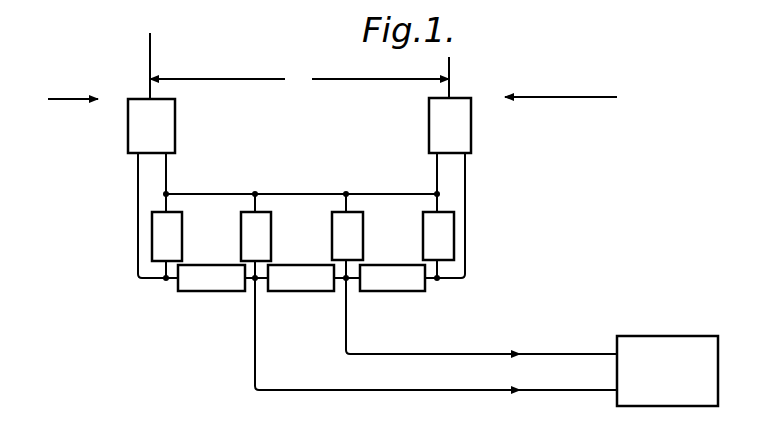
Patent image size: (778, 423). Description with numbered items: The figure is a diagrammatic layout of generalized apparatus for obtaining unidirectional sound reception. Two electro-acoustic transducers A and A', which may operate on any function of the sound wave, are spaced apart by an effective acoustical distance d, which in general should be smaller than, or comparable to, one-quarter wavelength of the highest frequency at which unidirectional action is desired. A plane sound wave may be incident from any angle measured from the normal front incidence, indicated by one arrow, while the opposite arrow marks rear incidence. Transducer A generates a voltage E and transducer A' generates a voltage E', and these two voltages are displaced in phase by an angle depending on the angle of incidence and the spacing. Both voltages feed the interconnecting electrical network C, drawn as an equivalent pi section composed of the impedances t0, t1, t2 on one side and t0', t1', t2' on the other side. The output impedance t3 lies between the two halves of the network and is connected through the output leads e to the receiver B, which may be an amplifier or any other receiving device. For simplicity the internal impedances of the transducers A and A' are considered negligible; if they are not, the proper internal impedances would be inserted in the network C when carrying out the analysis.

The electro-acoustic transducer A is at (165, 126).
The electro-acoustic transducer A' is at (417, 125).
The voltage generated by transducer A E is at (152, 213).
The voltage generated by transducer A' E' is at (451, 213).
The effective acoustical distance d is at (299, 79).
The impedance Z0 t0 is at (143, 245).
The impedance Z0' t0' is at (464, 245).
The impedance Z1 t1 is at (211, 301).
The impedance Z1' t1' is at (397, 298).
The impedance Z2 t2 is at (238, 236).
The impedance Z2' t2' is at (368, 236).
The impedance Z3 t3 is at (300, 283).
The interconnecting electrical network C is at (206, 240).
The output leads to receiver e is at (436, 334).
The receiver B is at (705, 369).